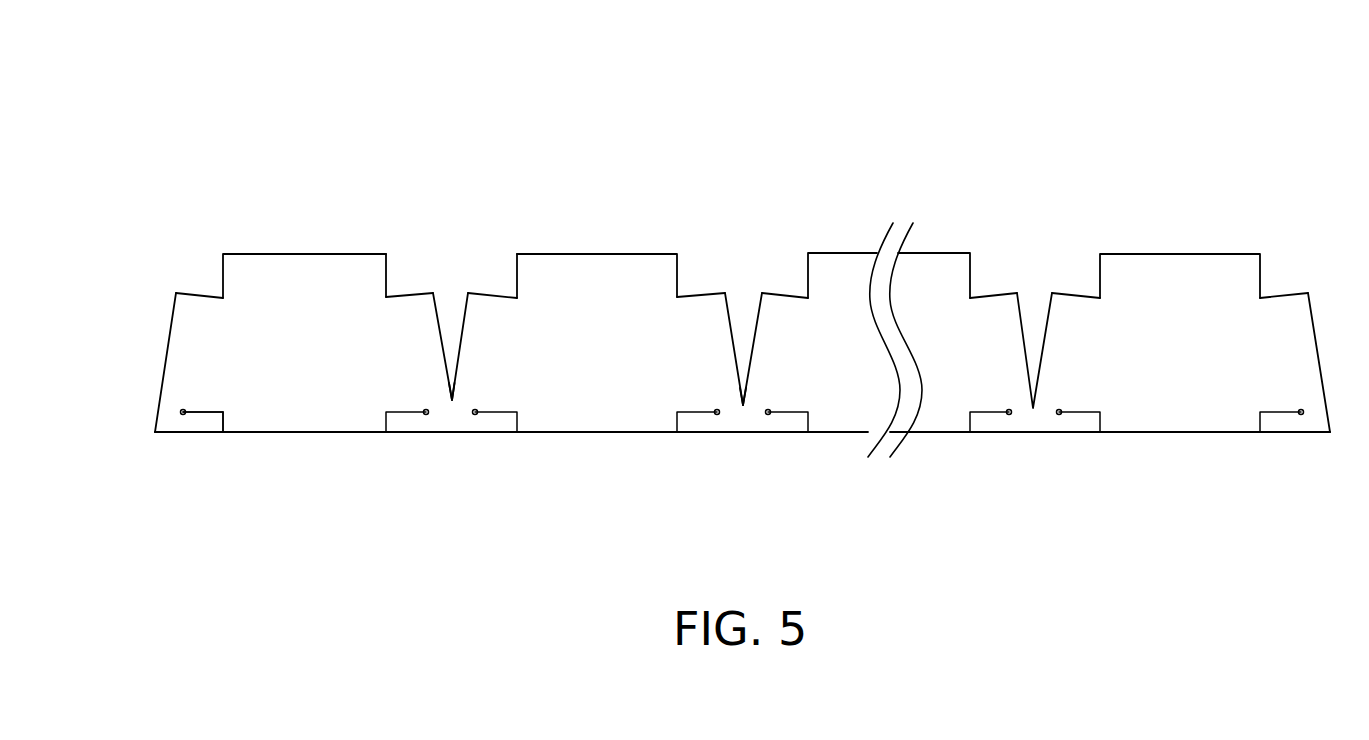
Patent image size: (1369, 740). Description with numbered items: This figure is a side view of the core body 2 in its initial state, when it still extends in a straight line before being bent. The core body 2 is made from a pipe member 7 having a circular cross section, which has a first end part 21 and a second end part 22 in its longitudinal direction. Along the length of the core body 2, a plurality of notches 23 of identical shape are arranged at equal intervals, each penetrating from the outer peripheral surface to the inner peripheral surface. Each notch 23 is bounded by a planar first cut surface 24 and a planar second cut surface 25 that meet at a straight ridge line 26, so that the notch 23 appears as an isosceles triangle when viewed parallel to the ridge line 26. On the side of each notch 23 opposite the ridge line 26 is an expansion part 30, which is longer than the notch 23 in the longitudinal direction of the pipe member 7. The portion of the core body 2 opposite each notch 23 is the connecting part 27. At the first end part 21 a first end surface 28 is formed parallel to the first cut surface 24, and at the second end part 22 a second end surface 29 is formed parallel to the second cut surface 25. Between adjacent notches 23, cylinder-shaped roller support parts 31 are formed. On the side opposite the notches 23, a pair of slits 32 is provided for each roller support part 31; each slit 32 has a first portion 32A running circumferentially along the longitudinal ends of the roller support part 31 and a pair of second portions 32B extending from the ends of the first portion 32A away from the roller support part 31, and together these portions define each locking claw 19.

The core body 2 is at (270, 100).
The pipe member 7 is at (622, 258).
The locking claw 19 is at (206, 425).
The first end part 21 is at (169, 425).
The second end part 22 is at (1297, 425).
The notch 23 is at (440, 330).
The first cut surface 24 is at (752, 318).
The second cut surface 25 is at (734, 318).
The ridge line 26 is at (452, 400).
The connecting part 27 is at (743, 405).
The first end surface 28 is at (168, 338).
The second end surface 29 is at (1318, 330).
The expansion part 30 is at (387, 276).
The roller support part 31 is at (332, 420).
The slit 32 is at (222, 403).
The first portion 32A is at (225, 420).
The second portion 32B is at (203, 412).